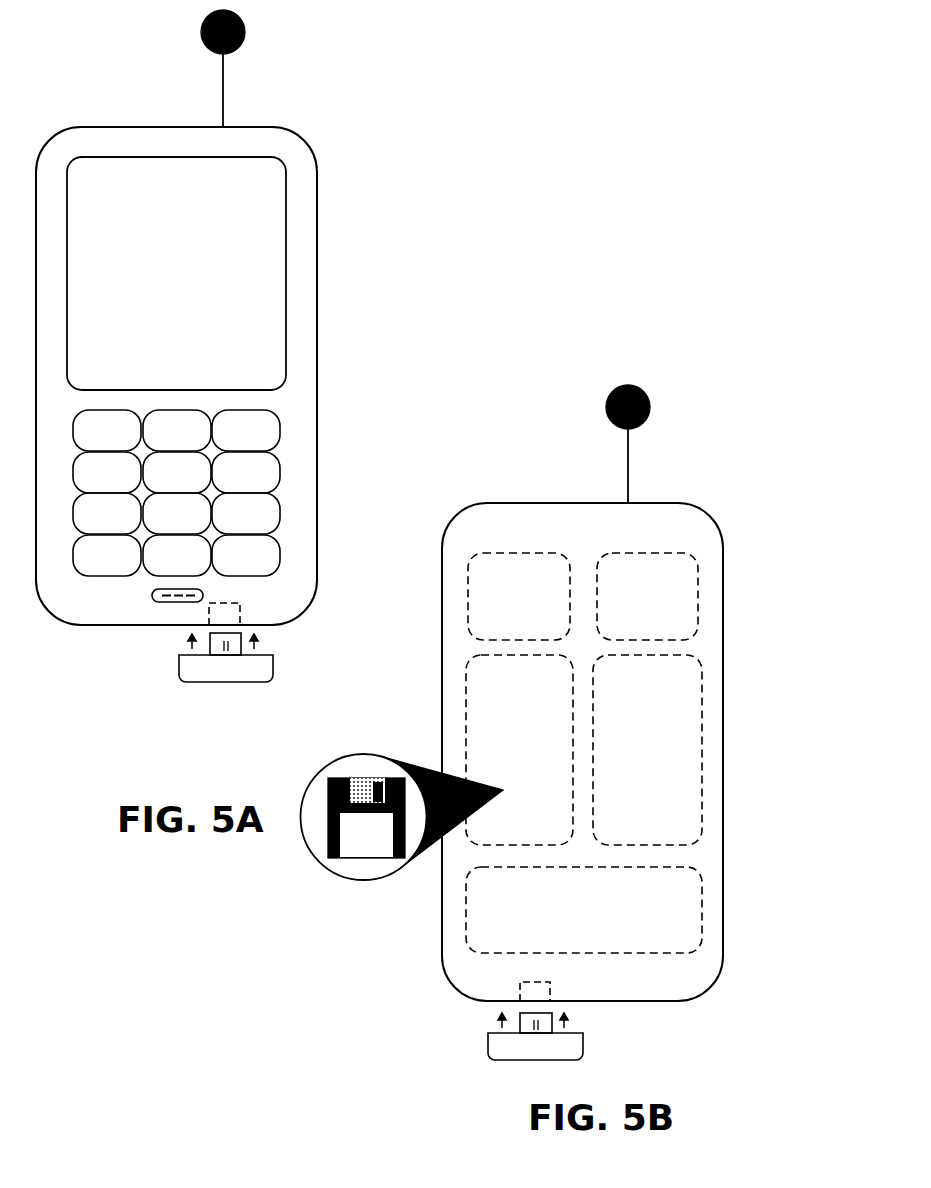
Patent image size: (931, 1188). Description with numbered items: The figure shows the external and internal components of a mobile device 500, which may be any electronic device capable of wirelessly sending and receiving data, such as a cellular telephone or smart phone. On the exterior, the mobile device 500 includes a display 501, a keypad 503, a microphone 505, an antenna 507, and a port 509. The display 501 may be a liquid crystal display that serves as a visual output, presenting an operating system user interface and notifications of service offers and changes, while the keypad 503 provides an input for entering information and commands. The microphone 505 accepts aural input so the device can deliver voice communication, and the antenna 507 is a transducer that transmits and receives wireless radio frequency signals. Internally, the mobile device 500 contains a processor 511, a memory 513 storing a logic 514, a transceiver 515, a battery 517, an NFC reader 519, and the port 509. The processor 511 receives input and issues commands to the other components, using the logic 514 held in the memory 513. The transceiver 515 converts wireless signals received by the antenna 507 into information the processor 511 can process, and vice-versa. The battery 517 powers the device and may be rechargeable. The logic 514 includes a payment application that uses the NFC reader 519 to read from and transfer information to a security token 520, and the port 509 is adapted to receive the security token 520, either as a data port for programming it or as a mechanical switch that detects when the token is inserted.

In FIG. 5A, the mobile device 500 is at (177, 127).
In FIG. 5B, the mobile device 500 is at (582, 503).
In FIG. 5A, the display 501 is at (285, 275).
In FIG. 5A, the keypad 503 is at (280, 420).
In FIG. 5A, the microphone 505 is at (157, 602).
In FIG. 5A, the antenna 507 is at (238, 48).
In FIG. 5B, the antenna 507 is at (642, 428).
In FIG. 5A, the port 509 is at (242, 615).
In FIG. 5B, the port 509 is at (518, 992).
In FIG. 5B, the processor 511 is at (475, 558).
In FIG. 5B, the memory 513 is at (468, 722).
In FIG. 5B, the logic 514 is at (348, 858).
In FIG. 5B, the transceiver 515 is at (700, 597).
In FIG. 5B, the battery 517 is at (700, 750).
In FIG. 5B, the NFC reader 519 is at (700, 908).
In FIG. 5A, the security token 520 is at (218, 682).
In FIG. 5B, the security token 520 is at (492, 1060).